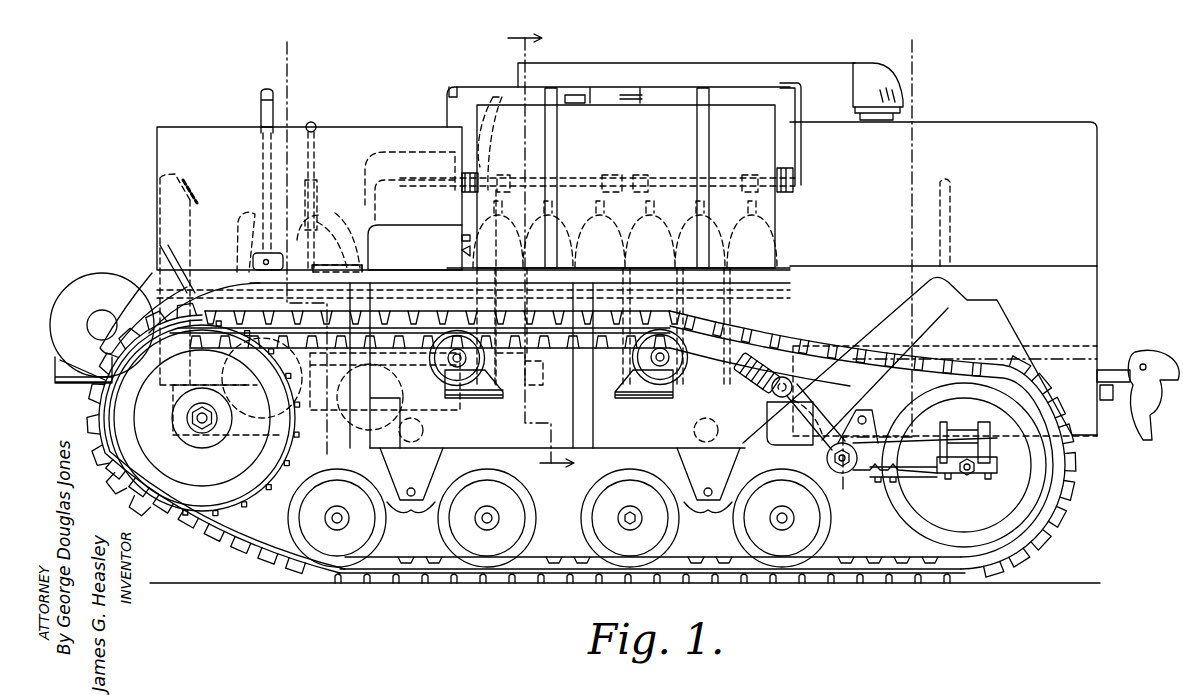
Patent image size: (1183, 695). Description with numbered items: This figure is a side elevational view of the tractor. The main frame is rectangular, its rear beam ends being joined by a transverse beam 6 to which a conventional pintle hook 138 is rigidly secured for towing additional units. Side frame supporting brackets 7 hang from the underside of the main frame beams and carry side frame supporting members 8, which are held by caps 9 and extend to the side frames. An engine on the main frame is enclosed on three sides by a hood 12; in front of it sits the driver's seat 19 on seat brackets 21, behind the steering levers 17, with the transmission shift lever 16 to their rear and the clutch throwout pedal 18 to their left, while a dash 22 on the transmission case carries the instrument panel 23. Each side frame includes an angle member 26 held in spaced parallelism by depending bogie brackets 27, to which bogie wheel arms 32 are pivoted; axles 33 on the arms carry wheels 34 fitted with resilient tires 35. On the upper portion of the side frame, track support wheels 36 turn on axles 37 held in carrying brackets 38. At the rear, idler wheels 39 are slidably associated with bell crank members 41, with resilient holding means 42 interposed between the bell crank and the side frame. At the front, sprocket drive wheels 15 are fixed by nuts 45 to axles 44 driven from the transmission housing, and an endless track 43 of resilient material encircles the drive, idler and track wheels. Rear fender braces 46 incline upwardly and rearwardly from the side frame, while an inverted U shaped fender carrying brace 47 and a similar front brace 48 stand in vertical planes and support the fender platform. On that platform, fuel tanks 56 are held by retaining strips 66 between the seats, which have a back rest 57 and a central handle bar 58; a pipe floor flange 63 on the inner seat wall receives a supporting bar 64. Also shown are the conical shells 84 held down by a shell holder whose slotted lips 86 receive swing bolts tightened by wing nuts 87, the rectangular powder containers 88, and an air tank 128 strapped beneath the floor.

The transverse beam 6 is at (309, 246).
The side frame supporting brackets 7 is at (533, 253).
The side frame supporting members 8 is at (420, 437).
The caps 9 is at (877, 266).
The hood 12 is at (700, 63).
The sprocket drive wheels 15 is at (258, 470).
The transmission shift lever 16 is at (375, 262).
The steering levers 17 is at (258, 160).
The clutch throwout pedal 18 is at (236, 232).
The driver's seat 19 is at (408, 140).
The seat brackets 21 is at (378, 243).
The dash 22 is at (177, 261).
The instrument panel 23 is at (190, 186).
The angle member 26 is at (473, 358).
The bogie brackets 27 is at (560, 474).
The bogie wheel arms 32 is at (559, 521).
The axles 33 is at (338, 512).
The wheels 34 is at (520, 546).
The resilient tires 35 is at (598, 490).
The track support wheels 36 is at (652, 350).
The axles 37 is at (455, 350).
The carrying brackets 38 is at (525, 380).
The idler wheels 39 is at (964, 465).
The bell crank members 41 is at (925, 445).
The resilient holding means 42 is at (770, 400).
The endless track 43 is at (98, 412).
The axles 44 is at (213, 414).
The nuts 45 is at (194, 425).
The rear fender braces 46 is at (937, 313).
The fender carrying braces 47 is at (593, 308).
The brace 48 is at (372, 310).
The fuel tanks 56 is at (626, 186).
The back rest 57 is at (943, 279).
The central handle bar 58 is at (952, 238).
The pipe floor flange 63 is at (462, 190).
The supporting bar 64 is at (740, 175).
The retaining strips 66 is at (558, 148).
The shells 84 is at (668, 230).
The lips 86 is at (462, 252).
The wing nuts 87 is at (462, 238).
The powder containers 88 is at (600, 88).
The air tank 128 is at (439, 430).
The pintle hook 138 is at (1138, 399).